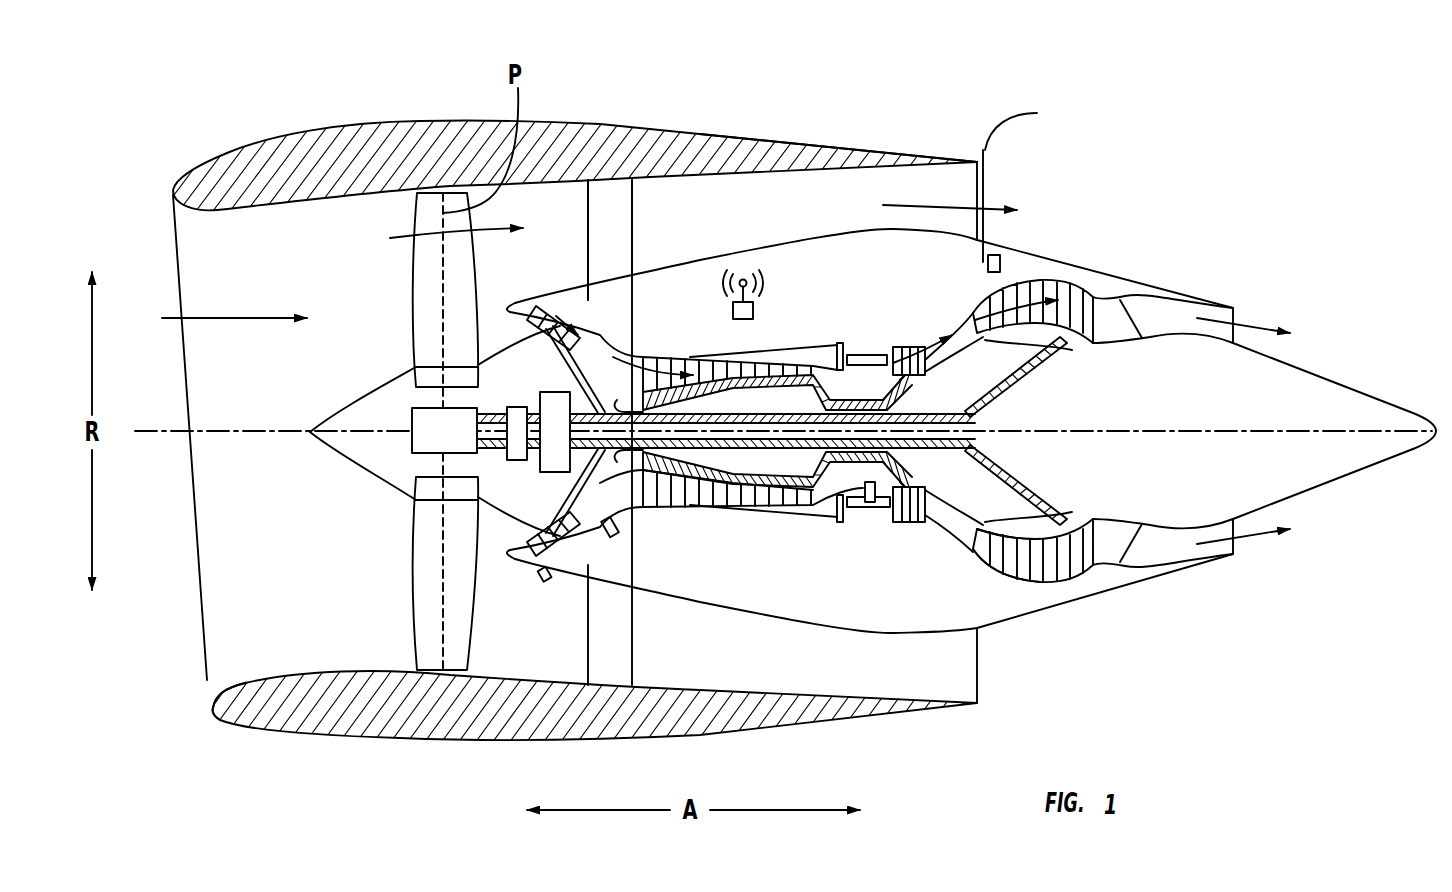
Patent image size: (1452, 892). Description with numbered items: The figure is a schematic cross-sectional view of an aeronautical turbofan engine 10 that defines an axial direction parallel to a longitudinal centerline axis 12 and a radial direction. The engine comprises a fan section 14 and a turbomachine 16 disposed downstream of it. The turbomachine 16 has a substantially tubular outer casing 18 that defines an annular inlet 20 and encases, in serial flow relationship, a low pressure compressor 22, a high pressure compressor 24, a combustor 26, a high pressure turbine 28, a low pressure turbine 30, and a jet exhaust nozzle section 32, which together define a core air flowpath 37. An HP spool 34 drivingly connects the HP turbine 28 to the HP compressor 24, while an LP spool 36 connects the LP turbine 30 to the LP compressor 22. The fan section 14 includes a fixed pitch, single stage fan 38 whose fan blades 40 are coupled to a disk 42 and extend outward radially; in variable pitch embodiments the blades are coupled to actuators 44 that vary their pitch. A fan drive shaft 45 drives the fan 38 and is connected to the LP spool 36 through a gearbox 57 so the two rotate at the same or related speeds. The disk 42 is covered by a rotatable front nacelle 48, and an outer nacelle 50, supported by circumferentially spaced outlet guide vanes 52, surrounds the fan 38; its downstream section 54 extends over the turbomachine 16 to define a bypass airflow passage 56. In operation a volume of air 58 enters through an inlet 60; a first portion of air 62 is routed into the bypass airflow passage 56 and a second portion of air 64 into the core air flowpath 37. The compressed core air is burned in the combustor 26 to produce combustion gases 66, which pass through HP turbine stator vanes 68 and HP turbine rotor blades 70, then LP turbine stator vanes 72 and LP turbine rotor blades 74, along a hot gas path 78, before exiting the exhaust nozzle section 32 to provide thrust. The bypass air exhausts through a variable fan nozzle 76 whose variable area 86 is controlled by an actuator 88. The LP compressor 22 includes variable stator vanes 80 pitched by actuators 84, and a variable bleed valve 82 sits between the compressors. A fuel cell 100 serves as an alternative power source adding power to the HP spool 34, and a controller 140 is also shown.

The turbofan engine 10 is at (1140, 138).
The longitudinal centerline axis 12 is at (1165, 430).
The fan section 14 is at (433, 103).
The turbomachine 16 is at (803, 305).
The outer casing 18 is at (813, 627).
The annular inlet 20 is at (520, 553).
The low pressure compressor 22 is at (583, 525).
The high pressure compressor 24 is at (667, 498).
The combustor 26 is at (860, 512).
The high pressure turbine 28 is at (935, 508).
The low pressure turbine 30 is at (1060, 583).
The jet exhaust nozzle section 32 is at (1148, 572).
The HP spool 34 is at (870, 397).
The LP spool 36 is at (930, 413).
The core air flowpath 37 is at (957, 537).
The fan 38 is at (358, 483).
The fan blades 40 is at (410, 585).
The disk 42 is at (430, 378).
The actuators 44 is at (413, 410).
The fan drive shaft 45 is at (500, 407).
The front nacelle 48 is at (323, 452).
The outer nacelle 50 is at (465, 745).
The outlet guide vanes 52 is at (633, 230).
The downstream section 54 is at (912, 148).
The bypass airflow passage 56 is at (706, 240).
The gearbox 57 is at (548, 393).
The volume of air 58 is at (240, 318).
The inlet 60 is at (210, 682).
The first portion of air 62 is at (433, 213).
The second portion of air 64 is at (510, 307).
The combustion gases 66 is at (913, 352).
The HP turbine stator vanes 68 is at (910, 522).
The HP turbine rotor blades 70 is at (897, 502).
The LP turbine stator vanes 72 is at (980, 553).
The LP turbine rotor blades 74 is at (993, 565).
The variable fan nozzle 76 is at (963, 188).
The hot gas path 78 is at (950, 318).
The variable stator vanes 80 is at (580, 538).
The variable bleed valve 82 is at (617, 527).
The actuators 84 is at (548, 580).
The variable area 86 is at (1025, 124).
The actuator 88 is at (1000, 257).
The fuel cell 100 is at (867, 510).
The controller 140 is at (732, 308).